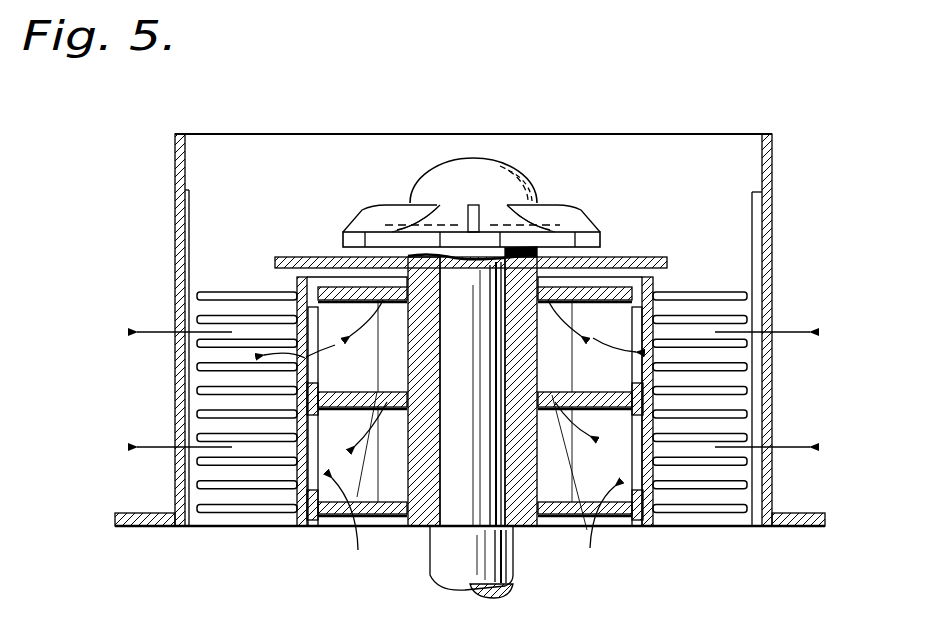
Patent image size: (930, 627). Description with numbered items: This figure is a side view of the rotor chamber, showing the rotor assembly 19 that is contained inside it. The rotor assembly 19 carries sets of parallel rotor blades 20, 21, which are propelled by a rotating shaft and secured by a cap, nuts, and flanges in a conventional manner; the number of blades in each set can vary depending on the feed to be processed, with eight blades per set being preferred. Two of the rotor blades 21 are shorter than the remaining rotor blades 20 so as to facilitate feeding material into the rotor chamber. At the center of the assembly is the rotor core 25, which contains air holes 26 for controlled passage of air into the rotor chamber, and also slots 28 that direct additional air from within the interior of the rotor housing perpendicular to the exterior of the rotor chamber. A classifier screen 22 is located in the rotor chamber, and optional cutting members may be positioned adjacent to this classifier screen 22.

The rotor assembly 19 is at (352, 172).
The rotor blades 20 is at (220, 292).
The rotor blades 21 is at (293, 256).
The classifier screen 22 is at (175, 233).
The rotor core 25 is at (298, 277).
The air holes 26 is at (372, 393).
The slots 28 is at (598, 230).